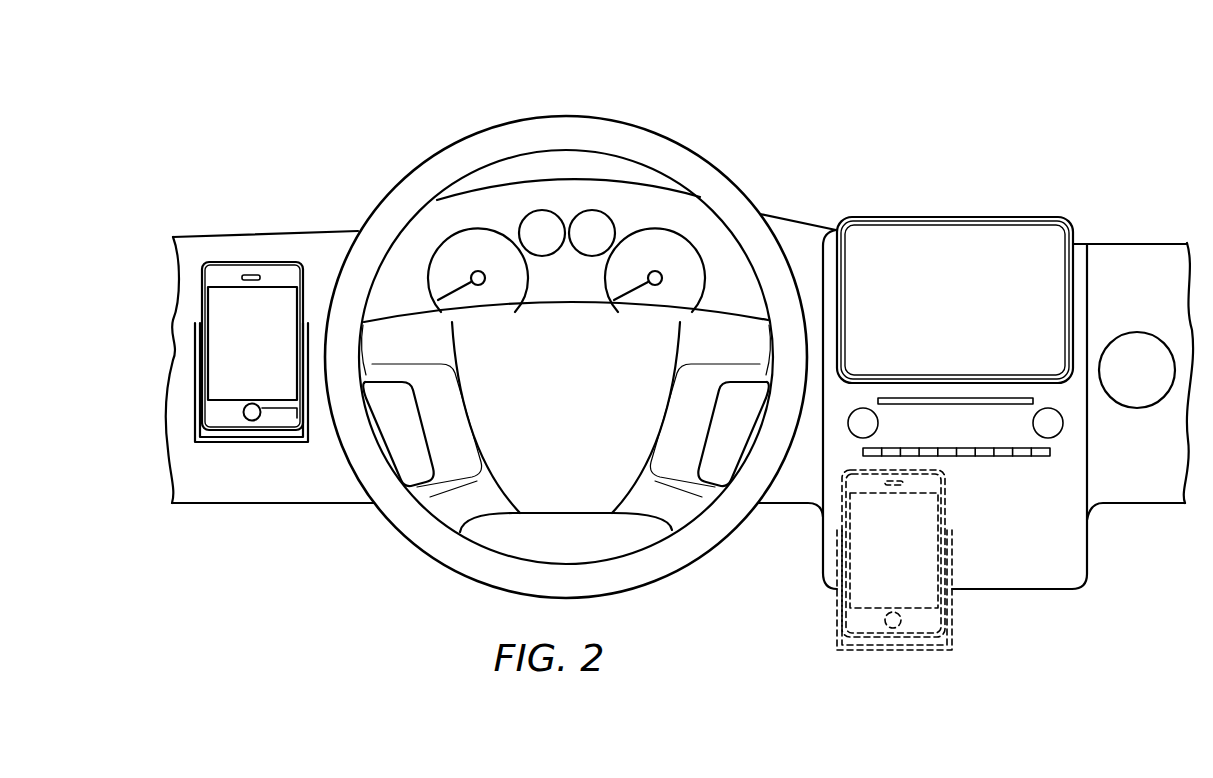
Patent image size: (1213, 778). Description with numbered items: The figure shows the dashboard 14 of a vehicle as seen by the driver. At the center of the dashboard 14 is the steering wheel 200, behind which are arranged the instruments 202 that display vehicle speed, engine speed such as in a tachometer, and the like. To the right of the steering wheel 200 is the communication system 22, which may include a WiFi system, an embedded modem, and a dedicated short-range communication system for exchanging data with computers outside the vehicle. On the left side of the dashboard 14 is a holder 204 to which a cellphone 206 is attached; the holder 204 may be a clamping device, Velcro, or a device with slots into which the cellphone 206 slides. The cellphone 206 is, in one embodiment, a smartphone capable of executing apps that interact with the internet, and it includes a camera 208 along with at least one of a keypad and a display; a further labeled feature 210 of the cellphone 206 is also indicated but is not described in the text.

The dashboard 14 is at (783, 158).
The communication system 22 is at (960, 205).
The steering wheel 200 is at (573, 116).
The instruments 202 is at (540, 183).
The holder 204 is at (224, 440).
The cellphone 206 is at (250, 262).
The camera 208 is at (253, 424).
The phone bezel/connector region 210 is at (273, 410).